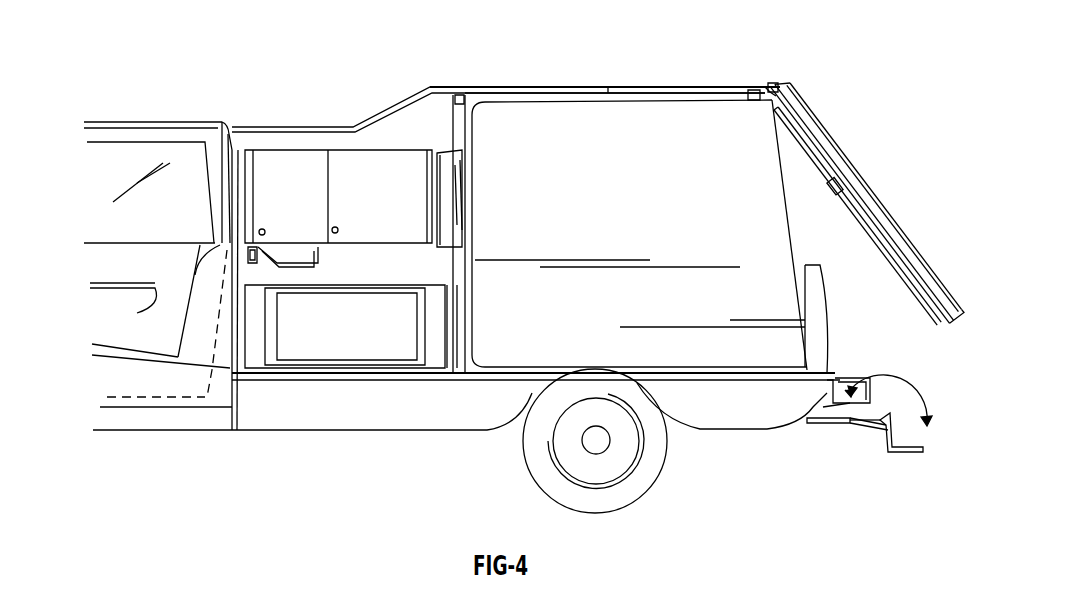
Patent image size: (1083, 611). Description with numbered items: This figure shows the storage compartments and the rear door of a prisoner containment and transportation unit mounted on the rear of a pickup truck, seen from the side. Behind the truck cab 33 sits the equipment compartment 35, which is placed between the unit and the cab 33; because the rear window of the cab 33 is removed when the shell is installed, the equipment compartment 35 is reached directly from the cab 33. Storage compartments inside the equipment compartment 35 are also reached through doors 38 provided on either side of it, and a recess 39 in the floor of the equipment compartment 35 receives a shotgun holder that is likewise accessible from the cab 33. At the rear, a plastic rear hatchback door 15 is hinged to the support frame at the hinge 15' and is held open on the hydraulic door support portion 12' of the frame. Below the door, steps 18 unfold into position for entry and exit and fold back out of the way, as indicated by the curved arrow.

The truck cab 33 is at (187, 225).
The equipment compartment 35 is at (297, 174).
The doors 38 is at (380, 215).
The recess 39 is at (297, 252).
The rear hatchback door 15 is at (867, 203).
The hinge 15' is at (799, 52).
The hydraulic door support portion 12' is at (857, 216).
The steps 18 is at (900, 450).